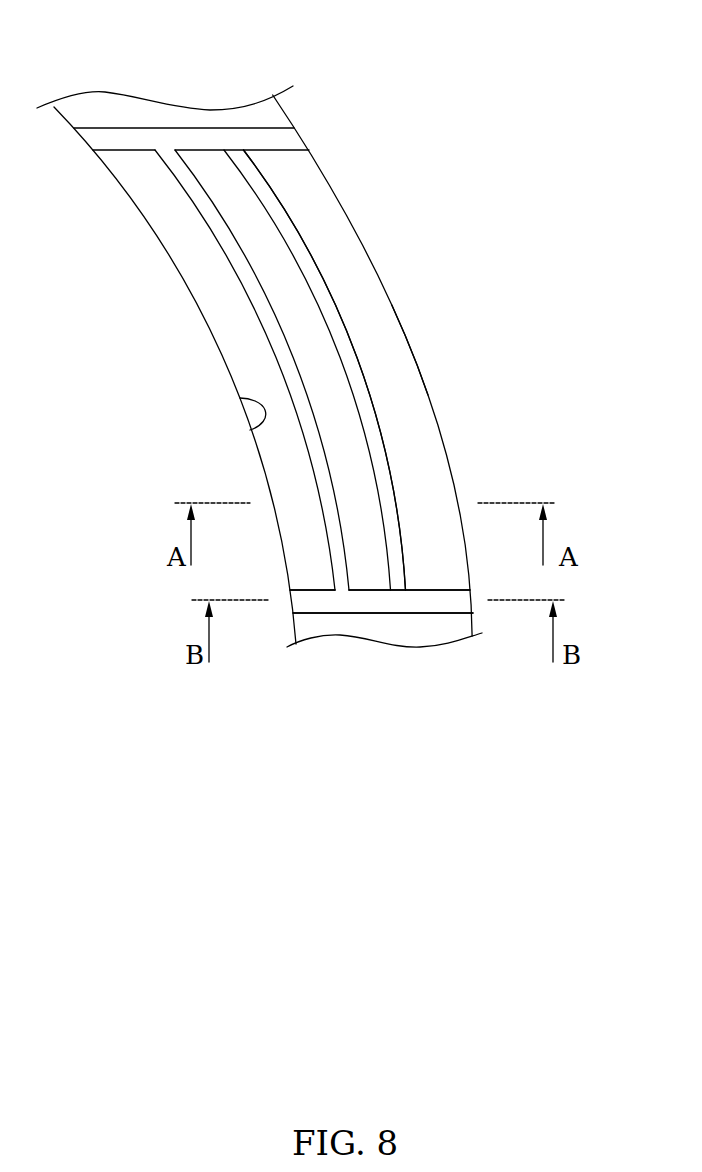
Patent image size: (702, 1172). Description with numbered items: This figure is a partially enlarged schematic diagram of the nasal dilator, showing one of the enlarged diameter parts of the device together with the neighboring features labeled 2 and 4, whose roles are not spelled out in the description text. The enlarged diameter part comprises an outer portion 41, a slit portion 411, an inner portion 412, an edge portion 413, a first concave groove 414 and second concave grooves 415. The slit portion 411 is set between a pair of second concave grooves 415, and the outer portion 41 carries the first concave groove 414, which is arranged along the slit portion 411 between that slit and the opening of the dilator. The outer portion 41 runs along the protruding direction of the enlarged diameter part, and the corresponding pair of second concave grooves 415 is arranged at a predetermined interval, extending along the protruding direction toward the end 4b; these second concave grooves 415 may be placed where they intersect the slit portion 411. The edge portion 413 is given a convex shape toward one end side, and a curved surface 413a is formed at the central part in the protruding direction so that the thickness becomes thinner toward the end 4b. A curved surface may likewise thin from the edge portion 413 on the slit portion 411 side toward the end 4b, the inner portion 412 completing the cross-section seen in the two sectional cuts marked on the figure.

The protrusion 2 is at (250, 430).
The arc-shaped member 4 is at (325, 625).
The end 4b is at (373, 267).
The outer portion 41 is at (302, 369).
The slit portion 411 is at (299, 252).
The inner portion 412 is at (225, 303).
The edge portion 413 is at (415, 497).
The curved surface 413a is at (375, 310).
The first concave groove 414 is at (220, 227).
The second concave grooves 415 is at (127, 140).